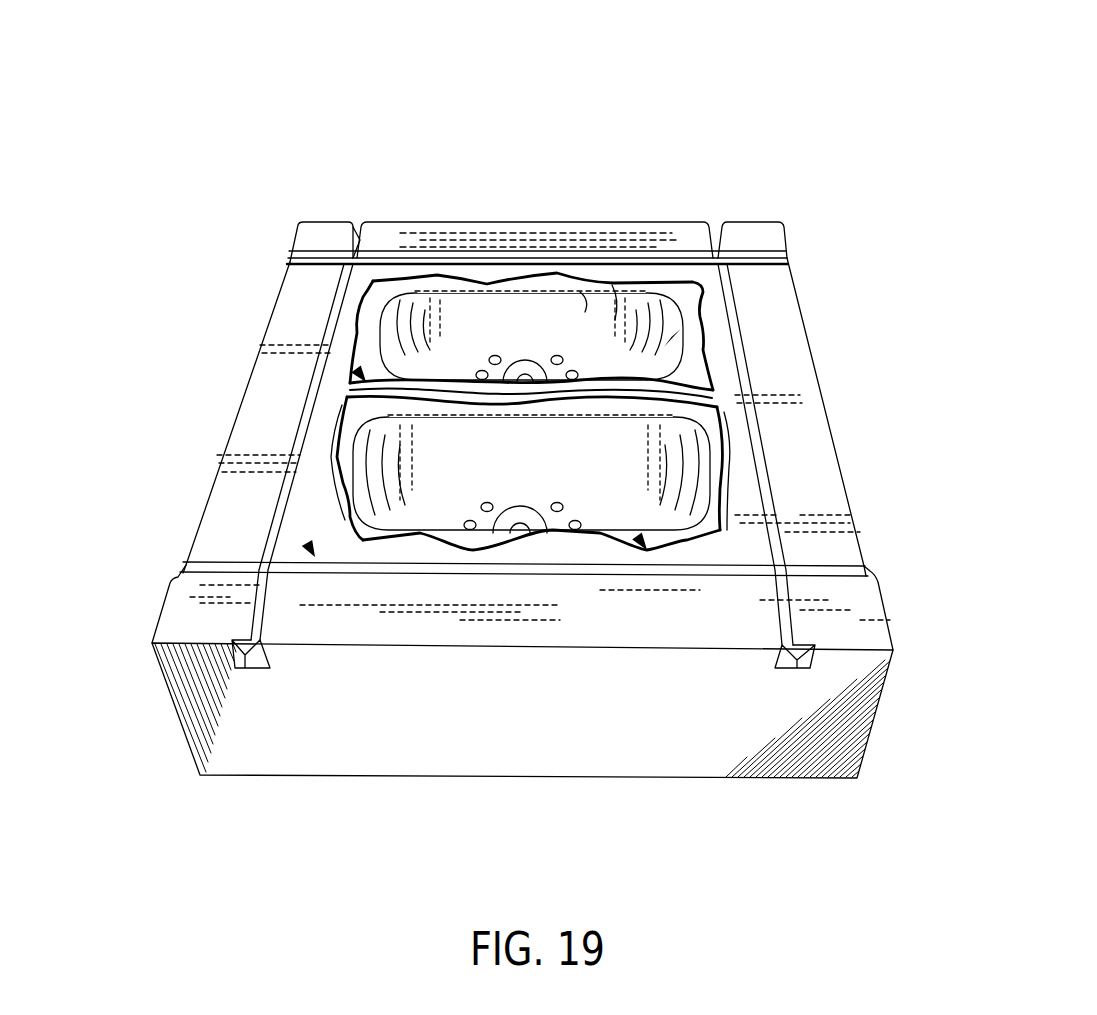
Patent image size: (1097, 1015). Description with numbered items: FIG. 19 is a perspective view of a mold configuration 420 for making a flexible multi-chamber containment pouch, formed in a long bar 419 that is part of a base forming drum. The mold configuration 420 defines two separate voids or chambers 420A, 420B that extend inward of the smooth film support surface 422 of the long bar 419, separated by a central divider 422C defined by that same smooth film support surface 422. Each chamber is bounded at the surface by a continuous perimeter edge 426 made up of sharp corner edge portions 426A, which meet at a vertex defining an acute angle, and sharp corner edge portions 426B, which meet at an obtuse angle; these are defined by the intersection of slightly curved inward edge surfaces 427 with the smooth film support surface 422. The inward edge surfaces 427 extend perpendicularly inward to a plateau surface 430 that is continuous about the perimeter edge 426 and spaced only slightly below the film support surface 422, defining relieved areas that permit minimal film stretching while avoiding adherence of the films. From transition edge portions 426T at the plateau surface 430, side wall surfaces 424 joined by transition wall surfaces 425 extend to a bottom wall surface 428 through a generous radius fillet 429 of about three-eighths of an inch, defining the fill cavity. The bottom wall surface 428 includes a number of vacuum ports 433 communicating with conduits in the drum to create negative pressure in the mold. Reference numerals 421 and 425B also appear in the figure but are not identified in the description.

The long bar 419 is at (250, 700).
The mold configuration 420 is at (438, 196).
The cavity 420A is at (713, 393).
The cavity 420B is at (693, 305).
The recess 421 is at (678, 333).
The smooth film support surface 422 is at (440, 278).
The central divider 422C is at (460, 388).
The side wall surfaces 424 is at (512, 310).
The transition wall surfaces 425 is at (413, 307).
The bottom wall 425B is at (640, 533).
The perimeter edge 426 is at (727, 647).
The sharp corner edge portions 426A is at (683, 297).
The sharp corner edge portions 426B is at (552, 262).
The transition edge portions 426T is at (425, 255).
The inward edge surfaces 427 is at (573, 370).
The bottom wall surface 428 is at (615, 285).
The radius fillet 429 is at (438, 497).
The plateau surfaces 430 is at (373, 281).
The vacuum ports 433 is at (582, 292).